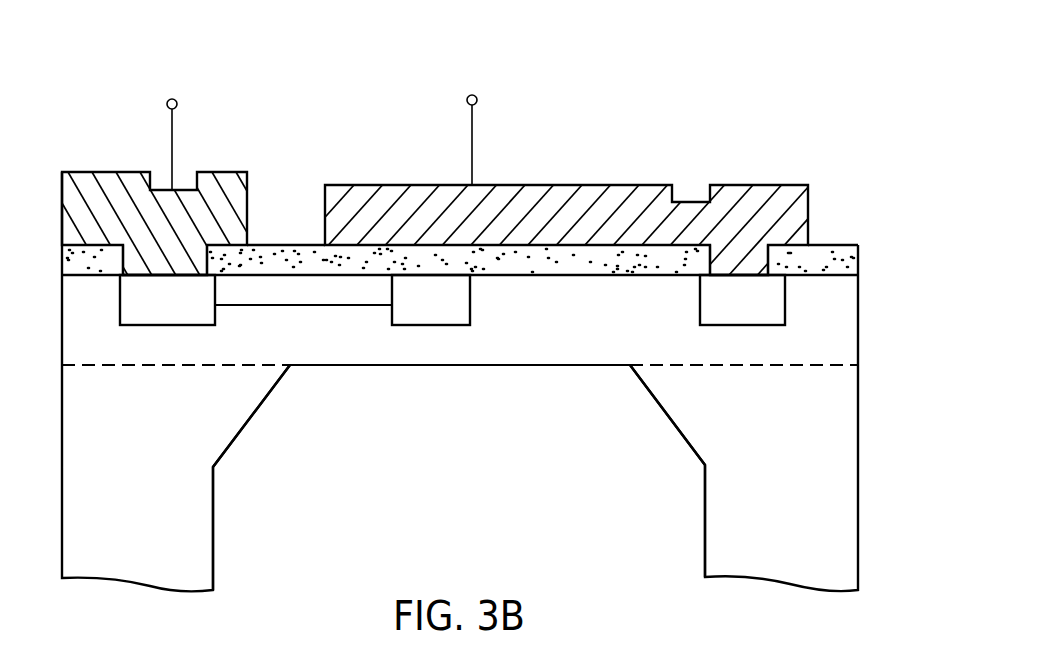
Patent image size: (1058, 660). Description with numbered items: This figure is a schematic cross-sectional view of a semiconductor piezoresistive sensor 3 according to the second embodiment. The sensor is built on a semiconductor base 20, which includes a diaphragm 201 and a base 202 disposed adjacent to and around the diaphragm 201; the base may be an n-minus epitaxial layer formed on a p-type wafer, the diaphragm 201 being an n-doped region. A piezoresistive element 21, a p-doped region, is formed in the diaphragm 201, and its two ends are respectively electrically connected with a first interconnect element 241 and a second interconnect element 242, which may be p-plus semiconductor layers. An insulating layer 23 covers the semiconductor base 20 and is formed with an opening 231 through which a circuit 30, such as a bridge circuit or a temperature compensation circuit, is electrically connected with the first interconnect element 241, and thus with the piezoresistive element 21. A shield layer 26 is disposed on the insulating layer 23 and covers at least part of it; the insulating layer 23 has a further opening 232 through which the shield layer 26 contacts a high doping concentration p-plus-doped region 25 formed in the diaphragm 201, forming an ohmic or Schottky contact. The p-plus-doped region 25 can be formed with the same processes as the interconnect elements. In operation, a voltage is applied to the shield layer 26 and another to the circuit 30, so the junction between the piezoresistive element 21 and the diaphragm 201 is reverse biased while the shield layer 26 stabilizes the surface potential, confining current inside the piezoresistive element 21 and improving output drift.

The semiconductor piezoresistive sensor 3 is at (87, 63).
The semiconductor base 20 is at (665, 508).
The diaphragm 201 is at (572, 353).
The base 202 is at (687, 430).
The piezoresistive element 21 is at (327, 307).
The insulating layer 23 is at (298, 246).
The opening 231 is at (197, 248).
The opening 232 is at (763, 253).
The first interconnect element 241 is at (180, 325).
The second interconnect element 242 is at (428, 325).
The p+-doped region 25 is at (778, 297).
The shield layer 26 is at (550, 185).
The circuit 30 is at (82, 170).